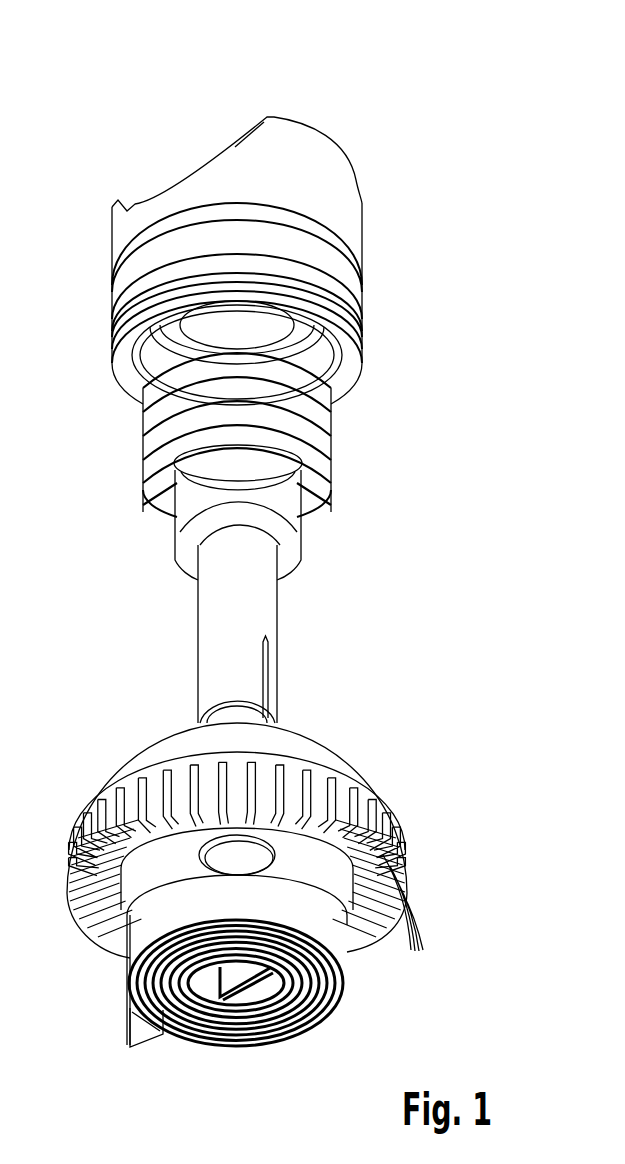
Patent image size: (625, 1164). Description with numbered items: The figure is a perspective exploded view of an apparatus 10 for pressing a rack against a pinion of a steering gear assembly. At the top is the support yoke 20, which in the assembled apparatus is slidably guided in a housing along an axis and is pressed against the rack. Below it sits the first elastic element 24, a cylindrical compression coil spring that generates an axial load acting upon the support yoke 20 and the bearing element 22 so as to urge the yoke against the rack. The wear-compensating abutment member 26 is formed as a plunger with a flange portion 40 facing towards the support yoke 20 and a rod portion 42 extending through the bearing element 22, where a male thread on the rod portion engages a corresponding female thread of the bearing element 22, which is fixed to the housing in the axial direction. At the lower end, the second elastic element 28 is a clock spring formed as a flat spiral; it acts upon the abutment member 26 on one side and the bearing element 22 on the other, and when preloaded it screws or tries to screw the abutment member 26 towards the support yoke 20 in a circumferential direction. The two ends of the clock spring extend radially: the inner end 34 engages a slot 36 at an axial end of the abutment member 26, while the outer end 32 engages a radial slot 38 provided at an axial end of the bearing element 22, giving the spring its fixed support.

The apparatus 10 is at (350, 90).
The support yoke 20 is at (340, 205).
The bearing element 22 is at (318, 752).
The first elastic element 24 is at (303, 438).
The wear-compensating abutment member 26 is at (170, 647).
The second elastic element 28 is at (143, 937).
The outer end of clock spring 32 is at (140, 1030).
The inner end of clock spring 34 is at (236, 970).
The slot 36 is at (263, 668).
The radial slot 38 is at (405, 921).
The flange portion 40 is at (280, 520).
The rod portion 42 is at (255, 603).